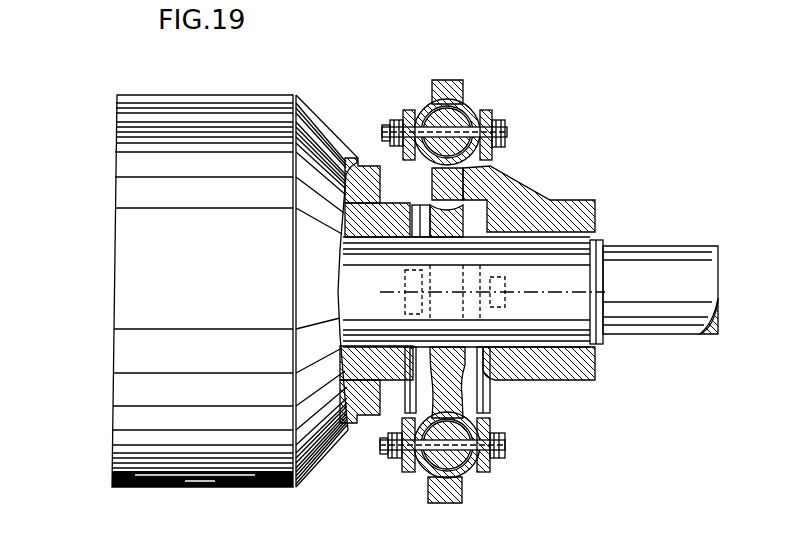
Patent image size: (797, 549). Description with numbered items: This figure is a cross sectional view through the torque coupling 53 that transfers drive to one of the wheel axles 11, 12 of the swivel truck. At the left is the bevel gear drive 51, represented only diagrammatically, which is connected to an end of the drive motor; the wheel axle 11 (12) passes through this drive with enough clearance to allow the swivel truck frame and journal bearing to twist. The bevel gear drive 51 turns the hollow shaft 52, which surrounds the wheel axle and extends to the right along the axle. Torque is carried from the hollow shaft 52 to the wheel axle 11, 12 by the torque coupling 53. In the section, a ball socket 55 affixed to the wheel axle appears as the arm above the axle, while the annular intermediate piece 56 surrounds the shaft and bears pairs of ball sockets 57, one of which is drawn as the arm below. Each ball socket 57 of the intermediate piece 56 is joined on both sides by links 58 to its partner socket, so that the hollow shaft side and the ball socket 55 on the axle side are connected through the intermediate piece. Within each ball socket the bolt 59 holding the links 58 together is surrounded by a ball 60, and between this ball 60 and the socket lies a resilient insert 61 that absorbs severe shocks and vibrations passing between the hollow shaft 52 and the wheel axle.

The wheel axle 11 is at (683, 273).
The wheel axle 12 is at (680, 262).
The bevel gear drive 51 is at (100, 258).
The hollow shaft 52 is at (343, 245).
The torque coupling 53 is at (600, 155).
The ball socket 55 is at (462, 96).
The annular intermediate piece 56 is at (470, 206).
The ball socket 57 is at (466, 478).
The link 58 is at (405, 120).
The bolt 59 is at (507, 447).
The ball 60 is at (470, 424).
The resilient insert 61 is at (433, 477).